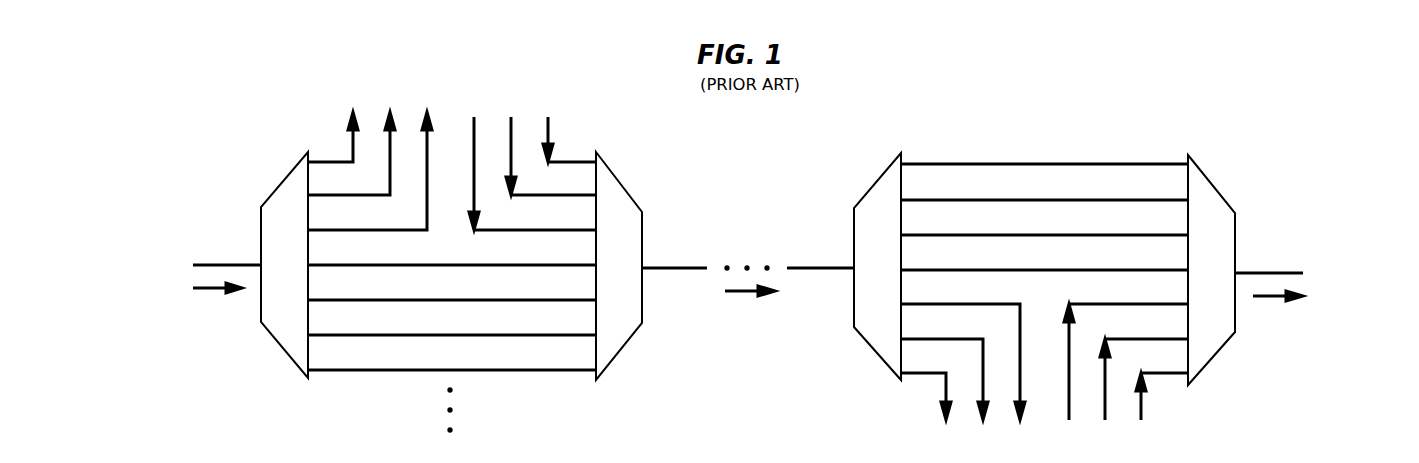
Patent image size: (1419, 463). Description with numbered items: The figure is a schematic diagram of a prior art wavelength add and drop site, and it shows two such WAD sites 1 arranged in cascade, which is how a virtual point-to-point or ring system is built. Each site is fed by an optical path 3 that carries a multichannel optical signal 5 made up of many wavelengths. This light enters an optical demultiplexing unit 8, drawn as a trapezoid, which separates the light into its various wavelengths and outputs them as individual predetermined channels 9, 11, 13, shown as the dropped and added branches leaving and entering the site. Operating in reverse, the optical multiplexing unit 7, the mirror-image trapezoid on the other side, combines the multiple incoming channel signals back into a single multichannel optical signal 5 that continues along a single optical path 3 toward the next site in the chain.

The WAD site 1 is at (543, 398).
The optical path 3 is at (247, 268).
The multichannel optical signal 5 is at (208, 290).
The optical multiplexing unit 7 is at (620, 188).
The optical demultiplexing unit 8 is at (291, 182).
The predetermined wavelength channel 9 is at (340, 97).
The predetermined wavelength channel 11 is at (389, 90).
The predetermined wavelength channel 13 is at (434, 90).